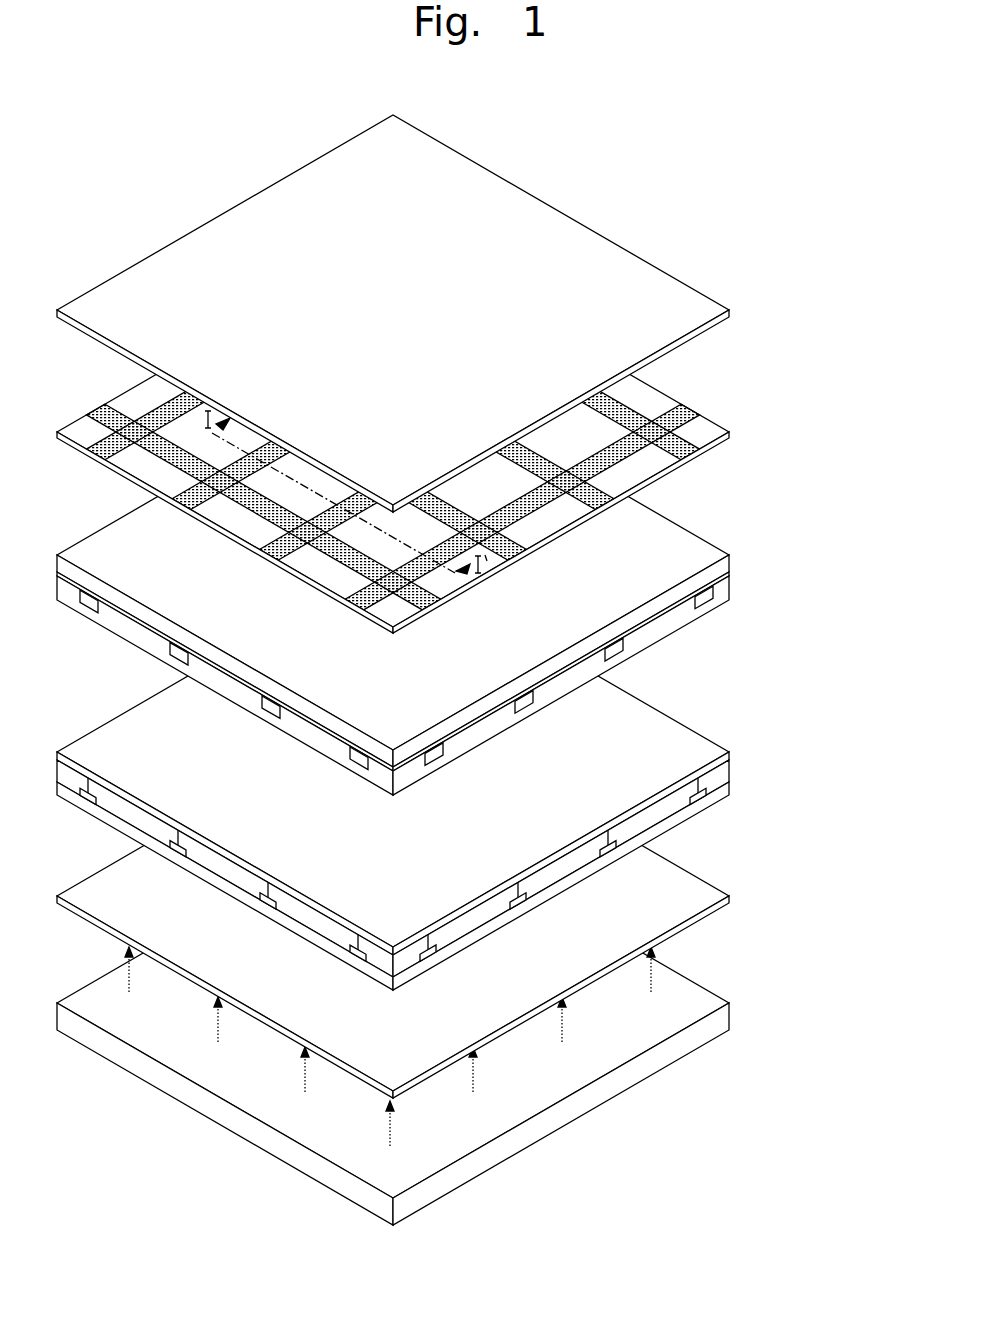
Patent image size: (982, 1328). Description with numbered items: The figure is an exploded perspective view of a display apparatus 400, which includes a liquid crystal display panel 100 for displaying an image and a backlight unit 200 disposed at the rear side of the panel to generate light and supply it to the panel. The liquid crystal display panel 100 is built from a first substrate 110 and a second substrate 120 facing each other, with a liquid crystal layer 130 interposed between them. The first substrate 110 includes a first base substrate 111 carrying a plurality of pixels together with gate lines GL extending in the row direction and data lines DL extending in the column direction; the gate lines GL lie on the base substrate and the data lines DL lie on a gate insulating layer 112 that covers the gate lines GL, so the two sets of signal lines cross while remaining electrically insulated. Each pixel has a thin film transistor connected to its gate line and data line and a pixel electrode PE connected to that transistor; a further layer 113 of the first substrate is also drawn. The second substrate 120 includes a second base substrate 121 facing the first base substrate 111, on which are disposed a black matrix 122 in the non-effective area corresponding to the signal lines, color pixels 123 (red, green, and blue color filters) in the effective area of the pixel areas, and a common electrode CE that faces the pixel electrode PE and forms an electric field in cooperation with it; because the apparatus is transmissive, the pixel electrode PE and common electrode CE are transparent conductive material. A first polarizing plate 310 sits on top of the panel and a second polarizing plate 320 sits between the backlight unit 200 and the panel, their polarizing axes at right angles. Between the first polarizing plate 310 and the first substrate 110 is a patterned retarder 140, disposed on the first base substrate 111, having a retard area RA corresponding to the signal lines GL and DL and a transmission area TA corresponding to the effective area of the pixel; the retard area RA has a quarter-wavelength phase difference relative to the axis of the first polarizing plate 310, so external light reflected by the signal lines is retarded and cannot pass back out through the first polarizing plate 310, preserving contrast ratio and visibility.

The display apparatus 400 is at (478, 670).
The first polarizing plate 310 is at (690, 304).
The patterned retarder 140 is at (453, 435).
The retard area RA is at (694, 403).
The transmission area TA is at (714, 440).
The liquid crystal display panel 100 is at (478, 613).
The first substrate 110 is at (453, 577).
The first base substrate 111 is at (720, 564).
The gate insulating layer 112 is at (722, 575).
The pixel layer 113 is at (722, 589).
The data lines DL is at (172, 645).
The gate lines GL is at (708, 590).
The pixel electrode PE is at (666, 637).
The liquid crystal layer 130 is at (692, 702).
The second substrate 120 is at (453, 773).
The common electrode CE is at (732, 758).
The color pixels 123 is at (718, 772).
The second base substrate 121 is at (719, 789).
The black matrix 122 is at (160, 858).
The second polarizing plate 320 is at (690, 894).
The backlight unit 200 is at (688, 1006).